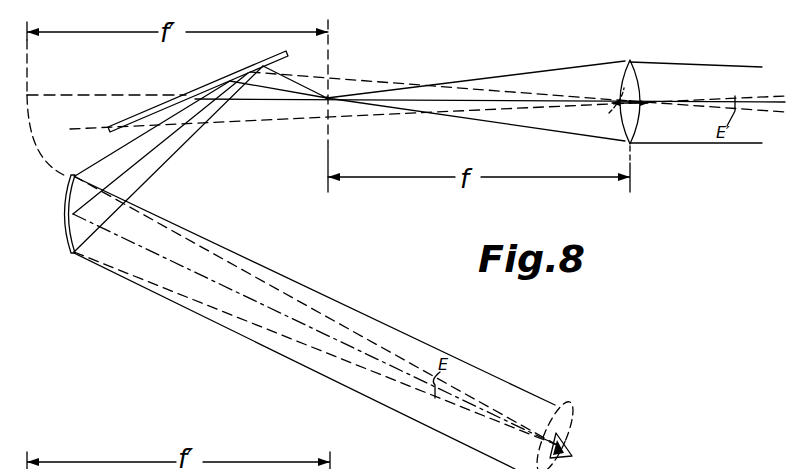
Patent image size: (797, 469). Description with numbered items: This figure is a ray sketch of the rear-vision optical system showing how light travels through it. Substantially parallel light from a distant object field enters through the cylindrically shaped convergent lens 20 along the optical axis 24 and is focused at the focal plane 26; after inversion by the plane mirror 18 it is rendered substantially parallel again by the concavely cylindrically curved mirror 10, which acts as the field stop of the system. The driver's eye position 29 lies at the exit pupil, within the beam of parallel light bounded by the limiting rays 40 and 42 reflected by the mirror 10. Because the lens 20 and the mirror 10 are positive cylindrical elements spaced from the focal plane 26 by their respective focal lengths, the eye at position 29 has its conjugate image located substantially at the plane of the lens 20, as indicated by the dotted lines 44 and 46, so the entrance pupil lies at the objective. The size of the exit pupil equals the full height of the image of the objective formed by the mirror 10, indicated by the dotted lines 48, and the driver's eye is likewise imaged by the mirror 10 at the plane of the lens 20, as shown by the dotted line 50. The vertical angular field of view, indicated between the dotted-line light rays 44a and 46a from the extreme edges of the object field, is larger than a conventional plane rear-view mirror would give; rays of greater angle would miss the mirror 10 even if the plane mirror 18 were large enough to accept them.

The concavely cylindrically curved mirror 10 is at (66, 247).
The plane mirror 18 is at (185, 100).
The cylindrically shaped convergent lens 20 is at (638, 128).
The optical axis 24 is at (475, 99).
The focal plane 26 is at (327, 152).
The eye position 29 is at (575, 447).
The limiting ray 40 is at (262, 264).
The limiting ray 42 is at (234, 332).
The dotted line 44 is at (358, 118).
The dotted line light ray 44a is at (761, 97).
The dotted line 46 is at (357, 75).
The dotted line light ray 46a is at (761, 115).
The dotted lines 48 is at (558, 411).
The dotted line 50 is at (609, 113).